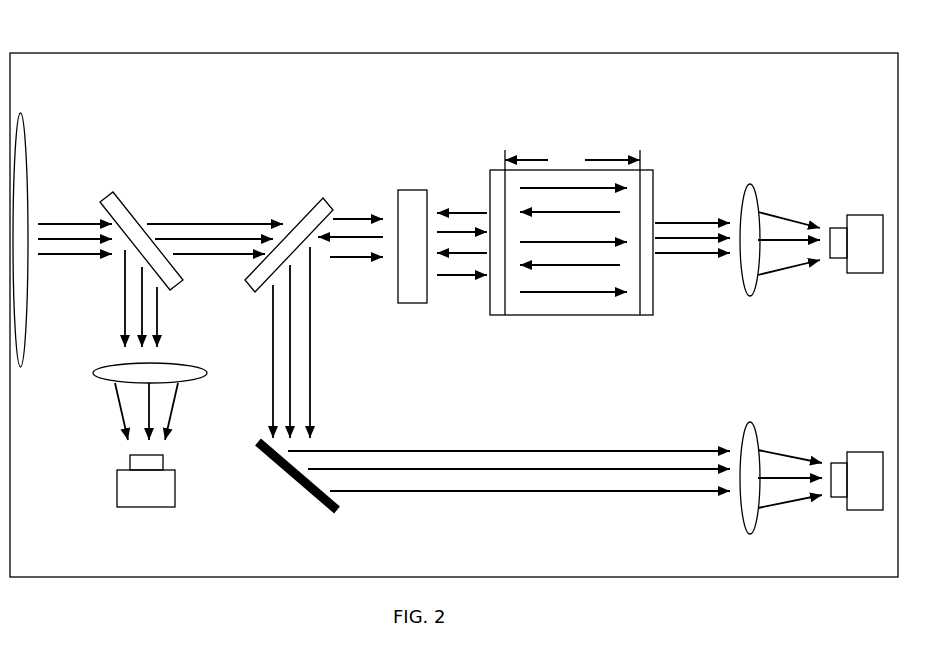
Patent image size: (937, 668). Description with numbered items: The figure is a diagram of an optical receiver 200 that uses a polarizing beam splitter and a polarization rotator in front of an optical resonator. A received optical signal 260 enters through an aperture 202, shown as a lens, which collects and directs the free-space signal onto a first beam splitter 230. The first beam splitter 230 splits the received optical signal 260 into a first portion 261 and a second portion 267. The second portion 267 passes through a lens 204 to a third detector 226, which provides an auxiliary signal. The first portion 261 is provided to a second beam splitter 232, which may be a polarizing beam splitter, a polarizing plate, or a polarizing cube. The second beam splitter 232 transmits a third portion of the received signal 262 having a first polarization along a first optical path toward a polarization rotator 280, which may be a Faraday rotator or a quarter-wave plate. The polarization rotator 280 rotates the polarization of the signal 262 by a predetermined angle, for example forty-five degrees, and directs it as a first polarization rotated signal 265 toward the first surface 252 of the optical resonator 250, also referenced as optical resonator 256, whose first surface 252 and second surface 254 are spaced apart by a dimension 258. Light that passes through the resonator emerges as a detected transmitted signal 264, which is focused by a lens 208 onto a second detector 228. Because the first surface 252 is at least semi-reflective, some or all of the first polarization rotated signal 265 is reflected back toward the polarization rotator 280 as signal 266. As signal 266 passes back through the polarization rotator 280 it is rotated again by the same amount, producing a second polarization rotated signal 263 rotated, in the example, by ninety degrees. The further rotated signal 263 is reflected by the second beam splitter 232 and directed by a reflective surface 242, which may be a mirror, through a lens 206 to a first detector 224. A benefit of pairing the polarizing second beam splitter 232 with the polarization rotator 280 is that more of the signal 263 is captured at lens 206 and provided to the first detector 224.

The optical receiver 200 is at (130, 52).
The aperture 202 is at (26, 132).
The lens 204 is at (207, 377).
The lens 206 is at (750, 421).
The lens 208 is at (756, 292).
The first detector 224 is at (878, 450).
The third detector 226 is at (176, 477).
The second detector 228 is at (877, 212).
The first beam splitter 230 is at (176, 283).
The second beam splitter 232 is at (312, 203).
The reflective surface 242 is at (338, 514).
The optical resonator 250 is at (487, 330).
The first surface 252 is at (500, 172).
The second surface 254 is at (645, 184).
The optical resonator 256 is at (572, 322).
The dimension 258 is at (572, 159).
The received optical signal 260 is at (92, 257).
The first portion 261 is at (233, 218).
The third portion of the received signal 262 is at (367, 212).
The second polarization rotated signal 263 is at (330, 245).
The detected transmitted signal 264 is at (673, 256).
The first polarization rotated signal 265 is at (463, 282).
The reflected signal 266 is at (456, 210).
The second portion 267 is at (163, 318).
The polarization rotator 280 is at (418, 189).